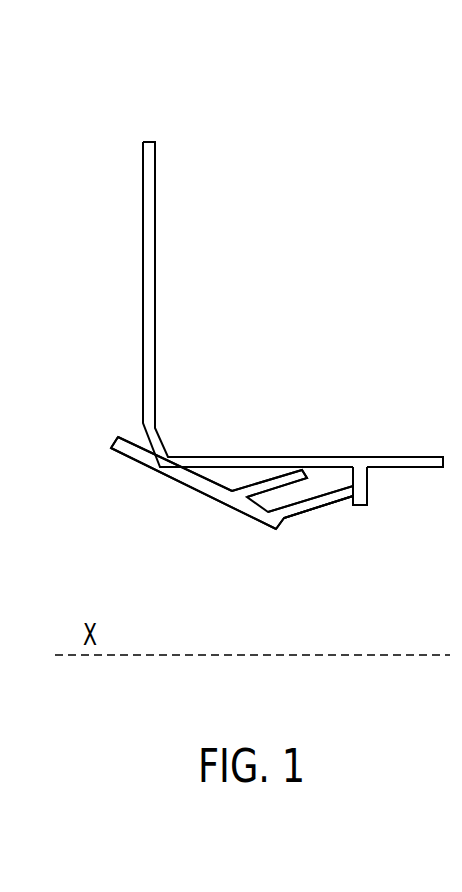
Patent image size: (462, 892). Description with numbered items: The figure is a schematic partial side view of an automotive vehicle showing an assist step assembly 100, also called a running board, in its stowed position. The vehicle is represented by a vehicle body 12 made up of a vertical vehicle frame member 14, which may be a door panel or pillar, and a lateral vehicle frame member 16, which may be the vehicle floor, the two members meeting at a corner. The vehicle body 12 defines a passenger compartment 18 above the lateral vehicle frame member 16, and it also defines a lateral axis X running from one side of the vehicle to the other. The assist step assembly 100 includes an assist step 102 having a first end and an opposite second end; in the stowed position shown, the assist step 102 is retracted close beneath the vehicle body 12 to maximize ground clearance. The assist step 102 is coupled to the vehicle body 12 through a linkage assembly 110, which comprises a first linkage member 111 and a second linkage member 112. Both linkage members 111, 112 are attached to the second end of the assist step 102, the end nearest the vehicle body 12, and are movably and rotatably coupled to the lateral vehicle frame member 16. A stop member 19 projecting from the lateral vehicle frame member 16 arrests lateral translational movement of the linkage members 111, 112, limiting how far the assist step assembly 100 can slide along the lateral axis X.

The vehicle body 12 is at (122, 164).
The vertical vehicle frame member 14 is at (155, 292).
The lateral vehicle frame member 16 is at (342, 457).
The passenger compartment 18 is at (278, 328).
The stop member 19 is at (368, 483).
The assist step assembly 100 is at (108, 412).
The assist step 102 is at (125, 456).
The linkage assembly 110 is at (311, 522).
The first linkage member 111 is at (273, 479).
The second linkage member 112 is at (339, 500).